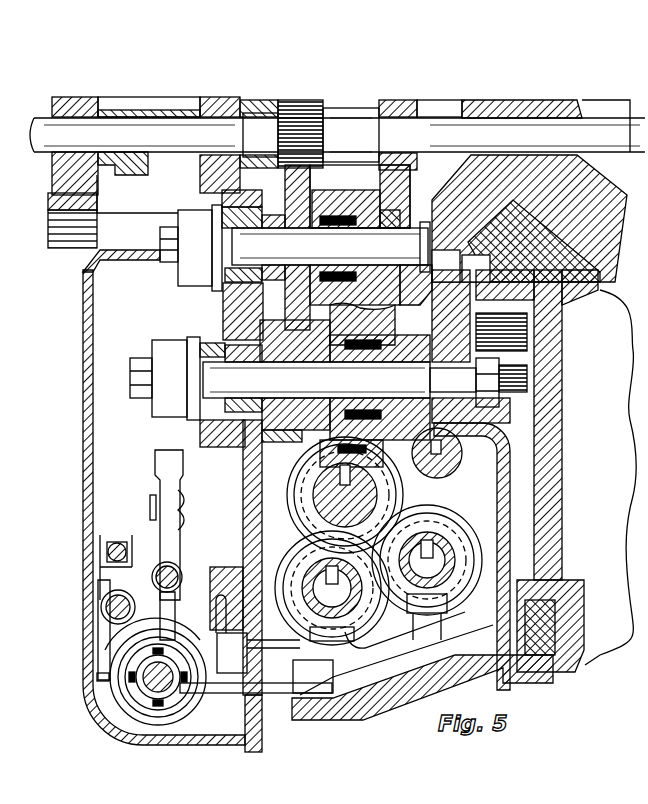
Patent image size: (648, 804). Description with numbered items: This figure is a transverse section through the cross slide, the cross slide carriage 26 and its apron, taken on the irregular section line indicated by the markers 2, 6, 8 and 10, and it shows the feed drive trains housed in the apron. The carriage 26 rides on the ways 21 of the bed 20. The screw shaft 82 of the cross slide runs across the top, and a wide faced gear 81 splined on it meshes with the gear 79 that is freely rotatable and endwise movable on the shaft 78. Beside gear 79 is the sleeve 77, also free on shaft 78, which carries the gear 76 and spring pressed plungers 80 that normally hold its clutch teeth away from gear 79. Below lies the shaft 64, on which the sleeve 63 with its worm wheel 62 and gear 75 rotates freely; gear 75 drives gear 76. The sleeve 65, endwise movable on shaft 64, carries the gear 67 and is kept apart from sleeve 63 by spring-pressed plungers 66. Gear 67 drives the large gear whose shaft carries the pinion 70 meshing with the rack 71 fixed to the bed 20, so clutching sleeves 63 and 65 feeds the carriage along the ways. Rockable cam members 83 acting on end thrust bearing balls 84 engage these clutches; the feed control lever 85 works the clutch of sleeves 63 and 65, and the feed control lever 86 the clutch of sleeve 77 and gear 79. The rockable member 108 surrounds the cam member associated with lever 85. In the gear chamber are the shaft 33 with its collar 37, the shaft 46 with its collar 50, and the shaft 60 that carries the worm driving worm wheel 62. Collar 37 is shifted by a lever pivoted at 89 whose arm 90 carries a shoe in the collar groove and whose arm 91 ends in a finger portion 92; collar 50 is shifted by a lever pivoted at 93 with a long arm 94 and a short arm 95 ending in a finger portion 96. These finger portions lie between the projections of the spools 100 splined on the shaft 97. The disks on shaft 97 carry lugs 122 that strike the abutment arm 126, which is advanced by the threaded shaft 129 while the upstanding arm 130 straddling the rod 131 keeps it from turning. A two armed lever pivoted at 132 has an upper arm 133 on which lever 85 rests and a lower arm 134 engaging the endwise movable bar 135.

The section line 10- 10 is at (120, 75).
The section line 2- 2 is at (208, 75).
The section line 8- 8 is at (255, 75).
The section line 6- 6 is at (45, 630).
The wide faced gear 81 is at (300, 104).
The screw shaft 82 is at (440, 128).
The cross slide carriage 26 is at (570, 103).
The feed control lever 86 is at (197, 240).
The end thrust bearing balls 84 is at (250, 215).
The spring pressed plungers 80 is at (325, 215).
The sleeve 77 is at (362, 200).
The shaft 78 is at (331, 247).
The ways 21 is at (560, 250).
The rockable cam members 83 is at (205, 275).
The gear 79 is at (280, 335).
The gear 76 is at (400, 310).
The rack 71 is at (520, 302).
The pinion 70 is at (505, 360).
The shaft 64 is at (339, 380).
The spring-pressed plungers 66 is at (352, 365).
The bed 20 is at (552, 432).
The sleeve 63 is at (470, 405).
The feed control lever 85 is at (168, 390).
The rockable member 108 is at (198, 447).
The gear 67 is at (263, 425).
The sleeve 65 is at (300, 435).
The worm wheel 62 is at (330, 453).
The upper arm 133 is at (166, 478).
The pivot 132 is at (150, 502).
The gear 75 is at (438, 474).
The shaft 33 is at (436, 545).
The rod 131 is at (100, 540).
The lower arm 134 is at (156, 532).
The shaft 60 is at (302, 505).
The shaft 46 is at (310, 575).
The upstanding arm 130 is at (105, 560).
The endwise movable bar 135 is at (152, 577).
The finger portion 96 is at (165, 625).
The pivot 93 is at (205, 612).
The shaft 129 is at (102, 612).
The short arm 95 is at (205, 630).
The collar 37 is at (445, 585).
The abutment arm 126 is at (100, 648).
The radially extending lug 122 is at (97, 678).
The shaft 97 is at (147, 680).
The spools 100 is at (135, 706).
The finger portion 92 is at (186, 705).
The arm 91 is at (232, 694).
The long arm 94 is at (255, 645).
The collar 50 is at (372, 655).
The arm 90 is at (395, 640).
The pivot 89 is at (306, 725).